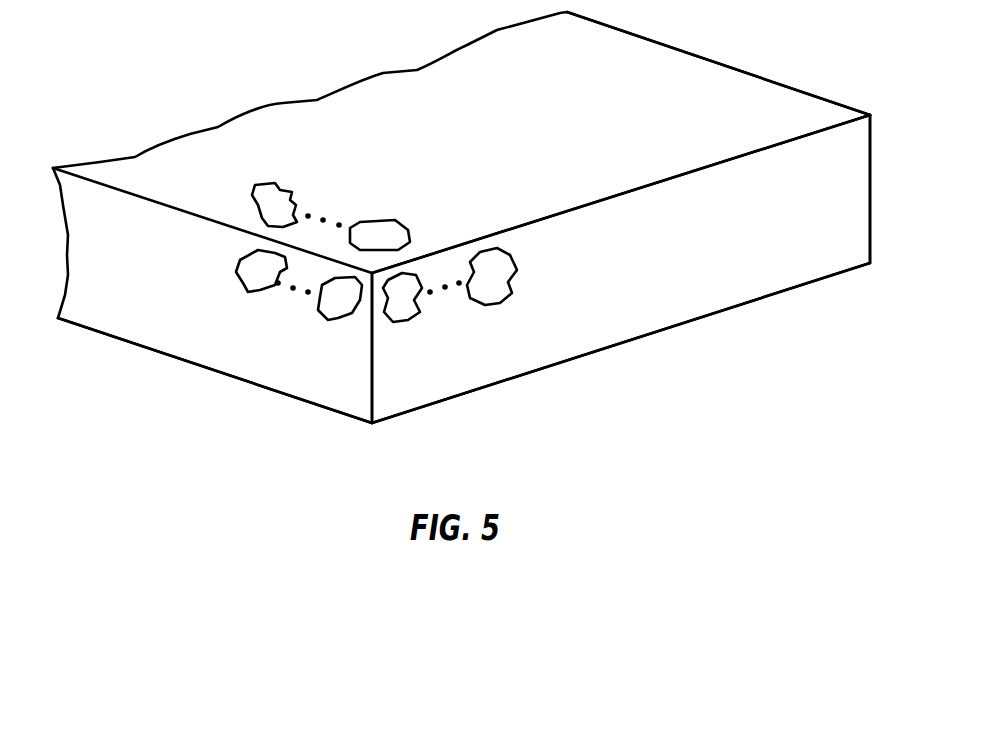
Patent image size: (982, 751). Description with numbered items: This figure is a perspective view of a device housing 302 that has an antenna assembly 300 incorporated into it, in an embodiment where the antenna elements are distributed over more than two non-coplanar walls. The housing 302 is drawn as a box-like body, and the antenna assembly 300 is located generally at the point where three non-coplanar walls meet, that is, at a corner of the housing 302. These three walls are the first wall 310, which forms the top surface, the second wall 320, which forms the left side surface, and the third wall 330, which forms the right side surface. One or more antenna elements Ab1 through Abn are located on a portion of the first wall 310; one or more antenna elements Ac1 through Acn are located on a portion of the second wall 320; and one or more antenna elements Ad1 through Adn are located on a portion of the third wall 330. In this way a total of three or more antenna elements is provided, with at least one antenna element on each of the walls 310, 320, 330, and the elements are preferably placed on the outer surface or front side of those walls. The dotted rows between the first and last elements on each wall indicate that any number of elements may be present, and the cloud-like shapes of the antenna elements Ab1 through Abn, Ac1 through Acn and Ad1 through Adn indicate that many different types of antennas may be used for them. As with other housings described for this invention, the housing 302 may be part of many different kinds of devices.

The antenna assembly 300 is at (340, 176).
The housing 302 is at (687, 52).
The first wall 310 is at (775, 95).
The second wall 320 is at (316, 392).
The third wall 330 is at (427, 392).
The antenna element Ab1 is at (278, 182).
The antenna element Abn is at (387, 220).
The antenna element Ac1 is at (250, 297).
The antenna element Acn is at (335, 312).
The antenna element Ad1 is at (400, 323).
The antenna element Adn is at (503, 287).